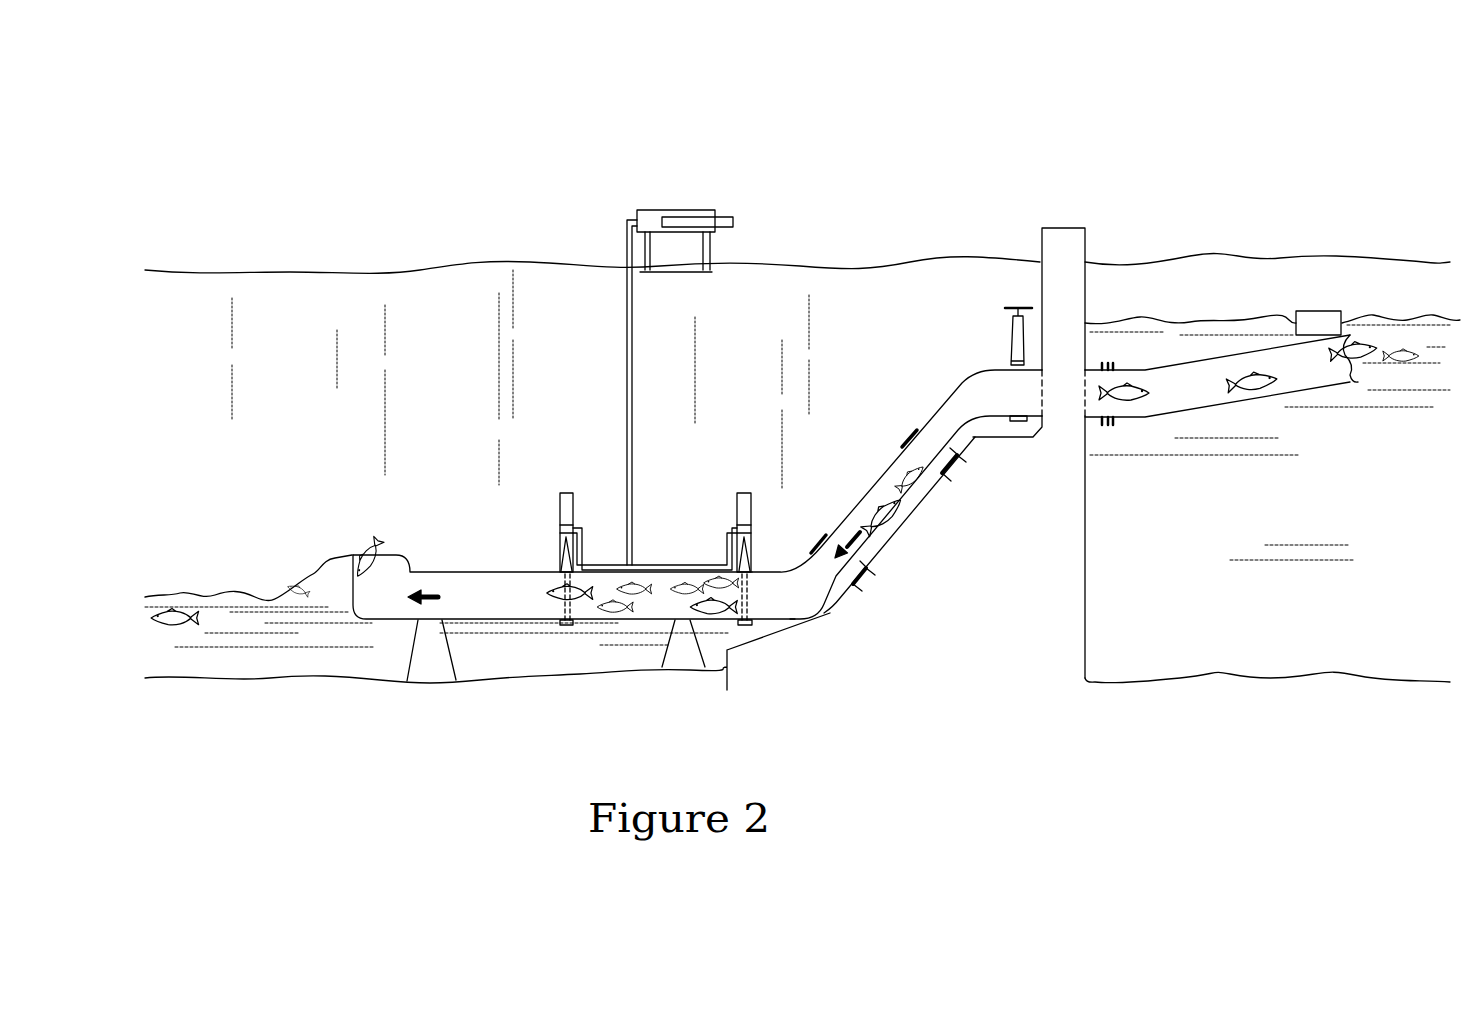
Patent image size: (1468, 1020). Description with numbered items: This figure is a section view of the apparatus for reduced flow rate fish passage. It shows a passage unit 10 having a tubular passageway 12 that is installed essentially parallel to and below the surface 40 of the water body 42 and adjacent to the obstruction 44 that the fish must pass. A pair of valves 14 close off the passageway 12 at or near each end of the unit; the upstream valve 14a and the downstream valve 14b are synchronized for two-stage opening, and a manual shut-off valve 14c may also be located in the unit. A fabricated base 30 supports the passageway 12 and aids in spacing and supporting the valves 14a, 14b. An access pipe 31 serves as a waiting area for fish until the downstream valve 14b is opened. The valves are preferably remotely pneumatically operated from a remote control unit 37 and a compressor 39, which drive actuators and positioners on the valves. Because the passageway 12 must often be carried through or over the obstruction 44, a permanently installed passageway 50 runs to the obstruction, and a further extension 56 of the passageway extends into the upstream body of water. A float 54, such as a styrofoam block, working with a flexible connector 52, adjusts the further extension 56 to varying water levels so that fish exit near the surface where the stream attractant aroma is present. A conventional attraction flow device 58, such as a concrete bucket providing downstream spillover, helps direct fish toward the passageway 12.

The passage unit 10 is at (658, 505).
The tubular passageway 12 is at (583, 612).
The valves 14 is at (523, 545).
The upstream valve 14a is at (742, 496).
The downstream valve 14b is at (566, 496).
The manual shut-off valve 14c is at (1016, 302).
The fabricated base 30 is at (430, 670).
The access pipe 31 is at (431, 570).
The remote control unit 37 is at (648, 209).
The compressor 39 is at (725, 215).
The surface 40 is at (232, 590).
The water body 42 is at (1193, 337).
The obstruction 44 is at (1068, 250).
The passageway 50 is at (958, 462).
The flexible connector 52 is at (1110, 425).
The float 54 is at (1325, 320).
The further extension 56 is at (1258, 388).
The attraction flow device 58 is at (385, 553).